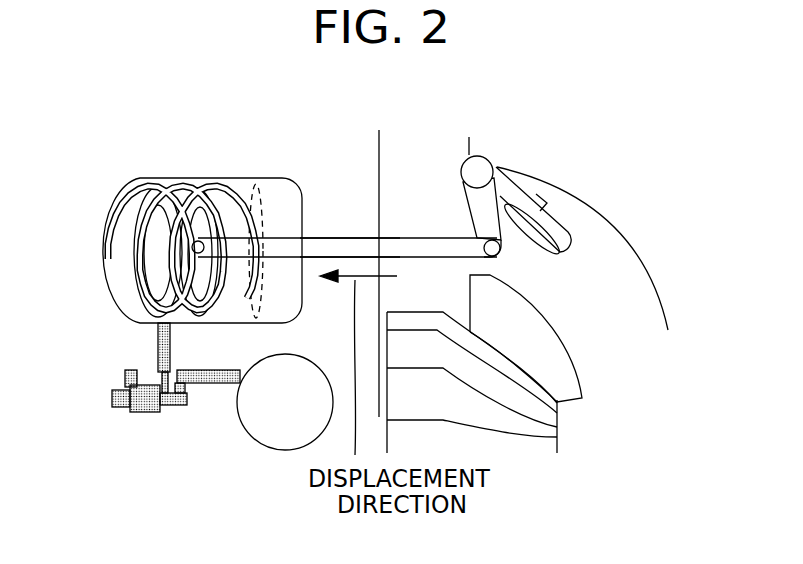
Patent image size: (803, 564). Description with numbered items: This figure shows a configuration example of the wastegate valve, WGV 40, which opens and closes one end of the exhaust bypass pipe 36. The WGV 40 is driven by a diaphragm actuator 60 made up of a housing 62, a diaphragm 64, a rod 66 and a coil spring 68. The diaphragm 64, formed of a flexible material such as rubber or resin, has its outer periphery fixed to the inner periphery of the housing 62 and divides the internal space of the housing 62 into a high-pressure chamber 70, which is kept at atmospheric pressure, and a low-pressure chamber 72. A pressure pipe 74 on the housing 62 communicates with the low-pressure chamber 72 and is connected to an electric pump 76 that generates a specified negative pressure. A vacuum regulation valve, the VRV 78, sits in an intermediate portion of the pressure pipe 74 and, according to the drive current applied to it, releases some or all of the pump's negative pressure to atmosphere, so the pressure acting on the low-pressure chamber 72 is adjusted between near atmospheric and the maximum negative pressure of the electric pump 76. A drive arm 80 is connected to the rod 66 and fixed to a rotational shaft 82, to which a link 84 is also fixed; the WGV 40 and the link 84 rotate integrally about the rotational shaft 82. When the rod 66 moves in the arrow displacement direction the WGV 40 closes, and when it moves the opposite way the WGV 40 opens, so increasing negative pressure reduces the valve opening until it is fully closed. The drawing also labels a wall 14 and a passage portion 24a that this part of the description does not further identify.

The partition wall 14 is at (379, 145).
The air passage 24a is at (557, 430).
The exhaust bypass pipe 36 is at (653, 287).
The WGV 40 is at (562, 170).
The diaphragm actuator 60 is at (188, 429).
The housing 62 is at (250, 178).
The diaphragm 64 is at (280, 190).
The rod 66 is at (350, 238).
The coil spring 68 is at (145, 180).
The high-pressure chamber 70 is at (270, 310).
The low-pressure chamber 72 is at (108, 272).
The pressure pipe 74 is at (158, 350).
The electric pump 76 is at (287, 450).
The vacuum regulation valve 78 is at (145, 412).
The drive arm 80 is at (462, 195).
The rotational shaft 82 is at (467, 158).
The link 84 is at (513, 188).